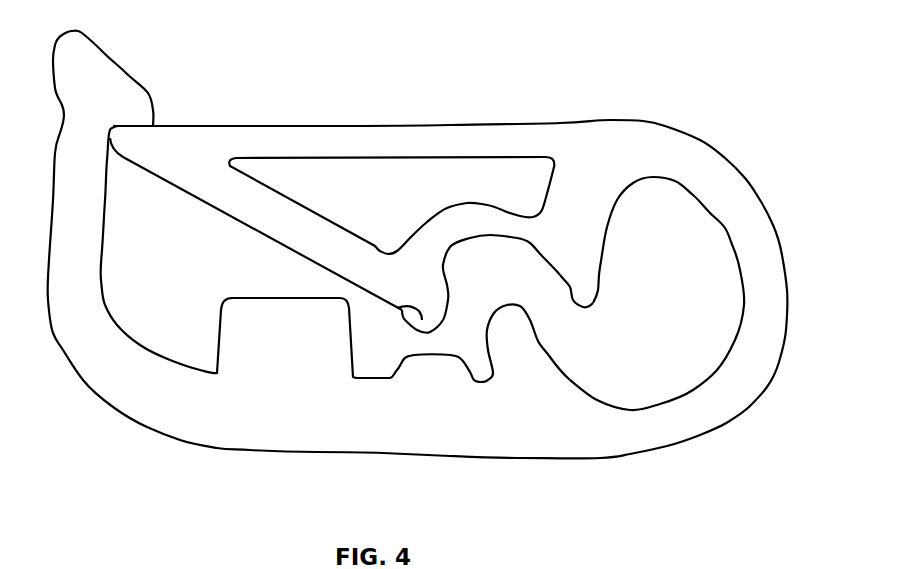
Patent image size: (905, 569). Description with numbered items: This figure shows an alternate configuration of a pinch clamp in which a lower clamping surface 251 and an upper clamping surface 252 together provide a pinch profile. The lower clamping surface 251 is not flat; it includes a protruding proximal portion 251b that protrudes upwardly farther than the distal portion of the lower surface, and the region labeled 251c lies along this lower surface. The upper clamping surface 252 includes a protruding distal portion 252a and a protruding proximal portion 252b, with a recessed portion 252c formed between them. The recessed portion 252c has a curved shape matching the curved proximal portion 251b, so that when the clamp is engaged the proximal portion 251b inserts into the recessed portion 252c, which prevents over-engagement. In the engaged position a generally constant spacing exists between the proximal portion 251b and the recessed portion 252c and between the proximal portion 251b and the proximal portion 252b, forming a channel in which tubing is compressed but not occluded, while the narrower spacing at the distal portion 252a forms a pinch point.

The lower clamping surface 251 is at (522, 427).
The proximal portion 251b is at (430, 375).
The finger portion 251c is at (512, 323).
The upper clamping surface 252 is at (670, 205).
The distal portion 252a is at (400, 308).
The proximal portion 252b is at (598, 302).
The recessed portion 252c is at (482, 232).